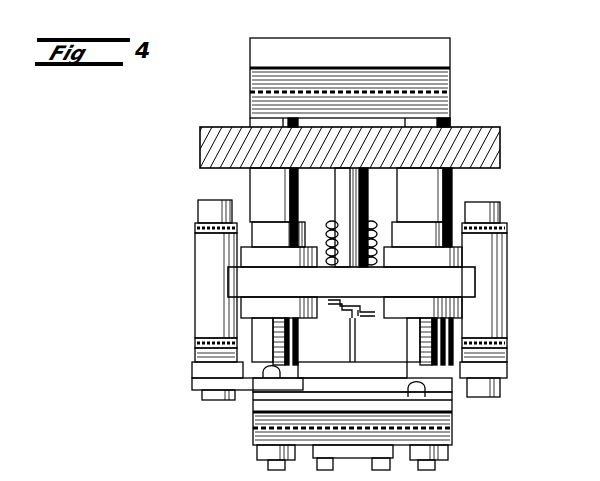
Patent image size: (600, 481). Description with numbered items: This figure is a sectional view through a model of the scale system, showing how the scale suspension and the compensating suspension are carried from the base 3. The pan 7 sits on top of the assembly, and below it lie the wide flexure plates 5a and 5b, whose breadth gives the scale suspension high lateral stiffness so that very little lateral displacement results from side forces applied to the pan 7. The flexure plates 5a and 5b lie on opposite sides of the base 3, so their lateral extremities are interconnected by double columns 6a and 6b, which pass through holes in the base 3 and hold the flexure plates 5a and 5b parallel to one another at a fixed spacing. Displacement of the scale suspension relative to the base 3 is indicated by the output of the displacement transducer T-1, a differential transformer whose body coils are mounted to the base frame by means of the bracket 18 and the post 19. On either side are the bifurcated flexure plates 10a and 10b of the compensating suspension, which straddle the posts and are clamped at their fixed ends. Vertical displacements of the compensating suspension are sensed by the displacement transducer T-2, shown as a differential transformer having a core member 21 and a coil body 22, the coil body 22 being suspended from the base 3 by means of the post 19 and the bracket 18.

The pan 7 is at (427, 38).
The flexure plate 5a is at (450, 92).
The base 3 is at (500, 152).
The double column 6b is at (250, 188).
The double column 6a is at (453, 191).
The post 19 is at (364, 183).
The displacement transducer T-2 is at (316, 233).
The displacement transducer T-1 is at (392, 234).
The flexure plate 10a is at (196, 225).
The flexure plate 10b is at (196, 340).
The bracket 18 is at (468, 288).
The coil body 22 is at (235, 308).
The core member 21 is at (296, 342).
The flexure plate 5b is at (452, 428).